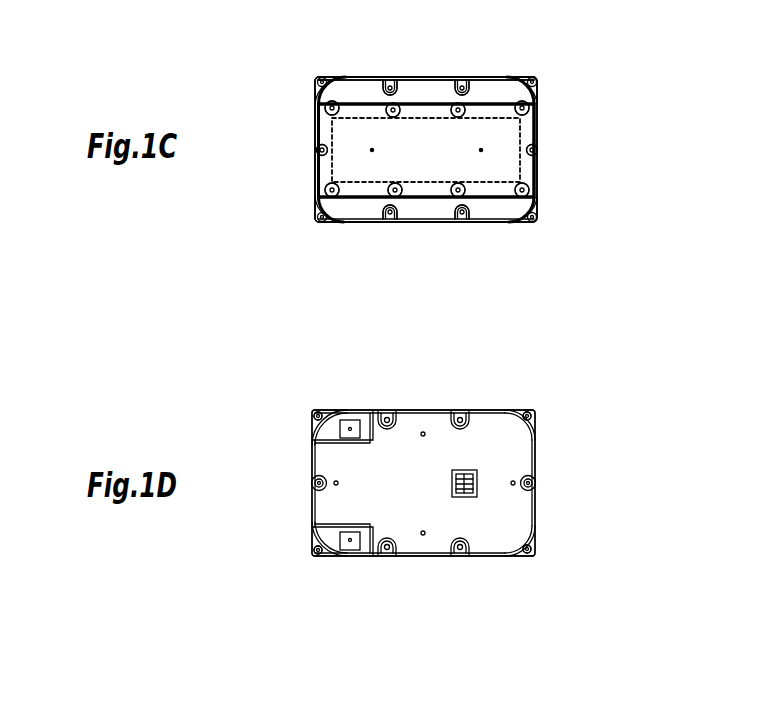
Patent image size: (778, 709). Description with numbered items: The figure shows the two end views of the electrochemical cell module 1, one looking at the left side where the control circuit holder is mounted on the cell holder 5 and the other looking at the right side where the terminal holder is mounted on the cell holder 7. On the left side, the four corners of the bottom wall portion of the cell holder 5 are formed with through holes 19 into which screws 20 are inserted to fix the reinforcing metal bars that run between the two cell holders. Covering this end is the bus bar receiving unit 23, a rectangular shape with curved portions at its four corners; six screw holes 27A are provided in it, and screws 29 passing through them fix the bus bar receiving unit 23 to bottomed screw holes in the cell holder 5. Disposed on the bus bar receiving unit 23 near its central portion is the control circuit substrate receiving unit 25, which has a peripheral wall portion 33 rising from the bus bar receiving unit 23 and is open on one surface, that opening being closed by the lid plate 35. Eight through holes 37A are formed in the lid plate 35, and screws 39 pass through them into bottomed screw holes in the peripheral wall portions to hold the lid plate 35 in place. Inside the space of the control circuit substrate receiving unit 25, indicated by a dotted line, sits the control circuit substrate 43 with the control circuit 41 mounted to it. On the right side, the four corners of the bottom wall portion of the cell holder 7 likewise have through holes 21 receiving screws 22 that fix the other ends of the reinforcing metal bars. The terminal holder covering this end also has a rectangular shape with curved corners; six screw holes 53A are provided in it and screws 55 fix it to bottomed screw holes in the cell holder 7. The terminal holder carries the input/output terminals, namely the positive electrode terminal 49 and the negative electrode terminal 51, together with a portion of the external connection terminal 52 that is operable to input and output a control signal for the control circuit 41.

In FIG. 1C, the electrochemical cell module 1 is at (596, 56).
In FIG. 1D, the electrochemical cell module 1 is at (576, 383).
In FIG. 1C, the cell holder 5 is at (523, 77).
In FIG. 1D, the cell holder 7 is at (518, 410).
In FIG. 1C, the through hole 19 is at (313, 88).
In FIG. 1C, the screw 20 is at (318, 82).
In FIG. 1D, the through hole 21 is at (313, 419).
In FIG. 1D, the screw 22 is at (314, 416).
In FIG. 1C, the bus bar receiving unit 23 is at (507, 90).
In FIG. 1C, the control circuit substrate receiving unit 25 is at (520, 170).
In FIG. 1C, the screw hole 27A is at (386, 79).
In FIG. 1C, the screw 29 is at (391, 84).
In FIG. 1C, the peripheral wall portion 33 is at (436, 101).
In FIG. 1C, the lid plate 35 is at (416, 104).
In FIG. 1C, the through hole 37A is at (330, 102).
In FIG. 1C, the screw 39 is at (334, 101).
In FIG. 1C, the control circuit 41 is at (418, 170).
In FIG. 1C, the control circuit substrate 43 is at (432, 170).
In FIG. 1D, the positive electrode terminal 49 is at (347, 420).
In FIG. 1D, the negative electrode terminal 51 is at (347, 537).
In FIG. 1D, the external connection terminal 52 is at (476, 497).
In FIG. 1D, the screw hole 53A is at (390, 412).
In FIG. 1D, the screw 55 is at (387, 417).